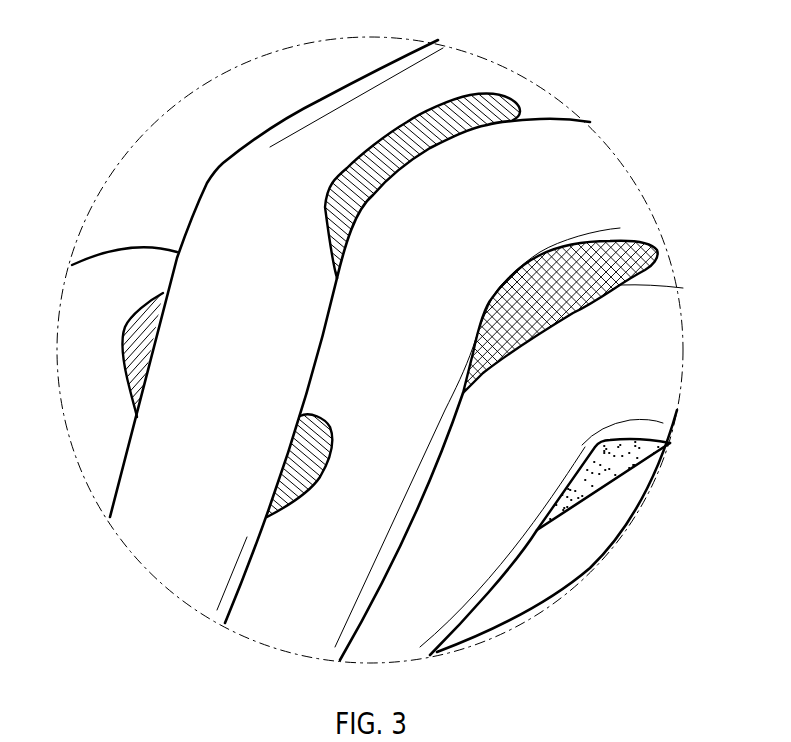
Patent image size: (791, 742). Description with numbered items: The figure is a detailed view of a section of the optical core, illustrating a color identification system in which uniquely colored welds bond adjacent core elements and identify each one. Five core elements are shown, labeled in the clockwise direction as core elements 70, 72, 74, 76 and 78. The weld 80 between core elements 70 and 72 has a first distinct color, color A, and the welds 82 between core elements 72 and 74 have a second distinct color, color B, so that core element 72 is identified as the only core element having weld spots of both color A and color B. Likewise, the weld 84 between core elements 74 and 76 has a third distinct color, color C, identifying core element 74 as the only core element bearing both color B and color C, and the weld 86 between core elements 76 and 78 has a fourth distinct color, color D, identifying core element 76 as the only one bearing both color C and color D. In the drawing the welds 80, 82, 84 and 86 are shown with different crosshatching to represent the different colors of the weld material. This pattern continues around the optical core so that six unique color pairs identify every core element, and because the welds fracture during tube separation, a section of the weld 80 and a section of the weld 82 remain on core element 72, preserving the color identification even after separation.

The core element 70 is at (80, 415).
The core element 72 is at (223, 215).
The core element 74 is at (553, 157).
The core element 76 is at (553, 443).
The core element 78 is at (570, 547).
The weld 80 is at (133, 330).
The welds 82 is at (462, 112).
The weld 84 is at (610, 253).
The weld 86 is at (641, 443).